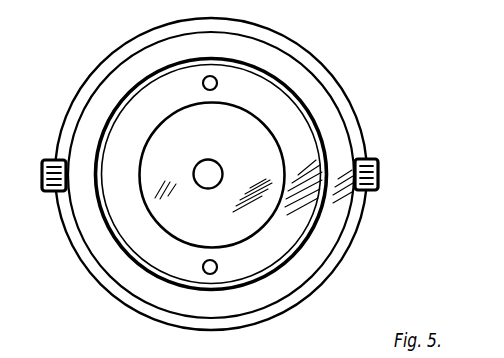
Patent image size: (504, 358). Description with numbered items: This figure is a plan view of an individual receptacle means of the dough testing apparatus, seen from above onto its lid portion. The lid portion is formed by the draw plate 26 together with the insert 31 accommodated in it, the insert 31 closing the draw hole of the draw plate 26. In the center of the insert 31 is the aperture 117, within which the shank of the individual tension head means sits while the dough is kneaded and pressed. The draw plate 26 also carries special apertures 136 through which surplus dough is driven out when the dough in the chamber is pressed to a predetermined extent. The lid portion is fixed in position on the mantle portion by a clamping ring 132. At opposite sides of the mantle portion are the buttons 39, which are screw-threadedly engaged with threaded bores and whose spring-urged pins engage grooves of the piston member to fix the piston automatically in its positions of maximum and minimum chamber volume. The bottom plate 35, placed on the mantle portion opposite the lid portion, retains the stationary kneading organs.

The draw plate 26 is at (68, 210).
The bottom plate 35 is at (315, 92).
The clamping ring 132 is at (330, 232).
The insert 31 is at (163, 145).
The aperture 117 is at (195, 186).
The special apertures 136 is at (248, 73).
The buttons 39 is at (373, 163).